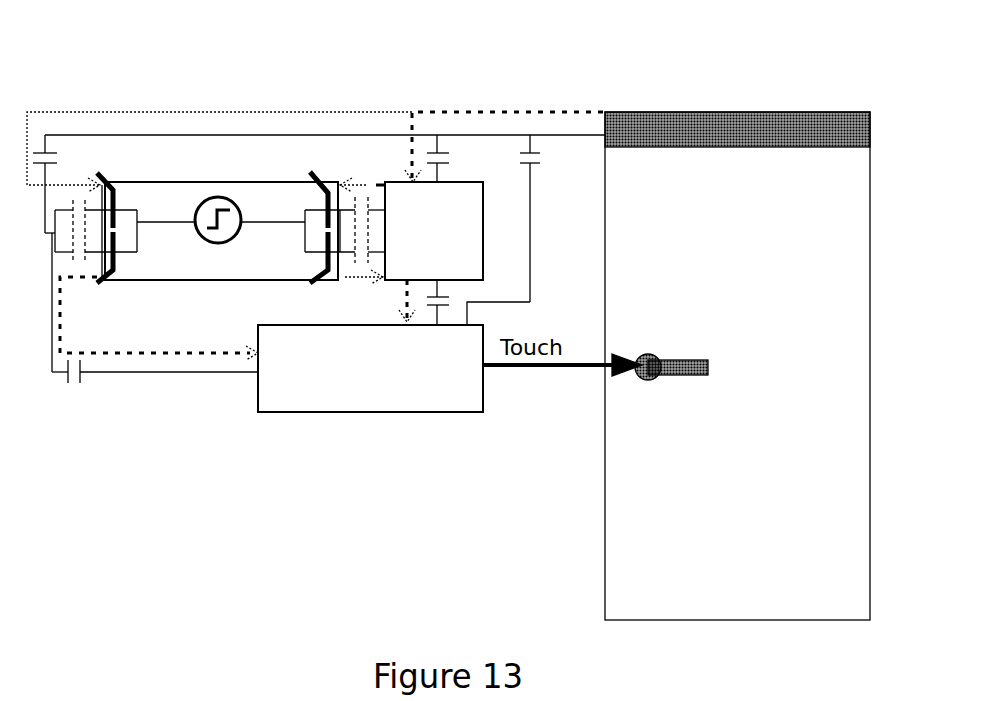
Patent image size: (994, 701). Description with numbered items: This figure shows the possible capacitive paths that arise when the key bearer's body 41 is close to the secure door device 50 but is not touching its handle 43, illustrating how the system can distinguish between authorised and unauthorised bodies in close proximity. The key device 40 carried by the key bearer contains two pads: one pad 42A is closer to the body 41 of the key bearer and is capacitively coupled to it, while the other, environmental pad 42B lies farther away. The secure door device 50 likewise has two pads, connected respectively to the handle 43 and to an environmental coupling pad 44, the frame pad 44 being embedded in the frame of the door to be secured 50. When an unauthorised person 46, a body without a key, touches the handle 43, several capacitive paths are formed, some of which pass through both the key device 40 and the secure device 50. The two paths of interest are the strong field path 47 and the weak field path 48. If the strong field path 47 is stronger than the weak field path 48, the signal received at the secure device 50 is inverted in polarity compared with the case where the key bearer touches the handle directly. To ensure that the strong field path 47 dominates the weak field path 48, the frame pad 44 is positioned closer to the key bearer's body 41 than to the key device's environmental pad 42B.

The key device 40 is at (205, 178).
The body 41 is at (465, 182).
The pad 42A is at (332, 232).
The environmental pad 42B is at (96, 232).
The handle 43 is at (705, 360).
The environmental coupling pad 44 is at (813, 109).
The unauthorised person 46 is at (460, 412).
The strong field path 47 is at (530, 82).
The weak field path 48 is at (167, 80).
The secure door device 50 is at (870, 337).